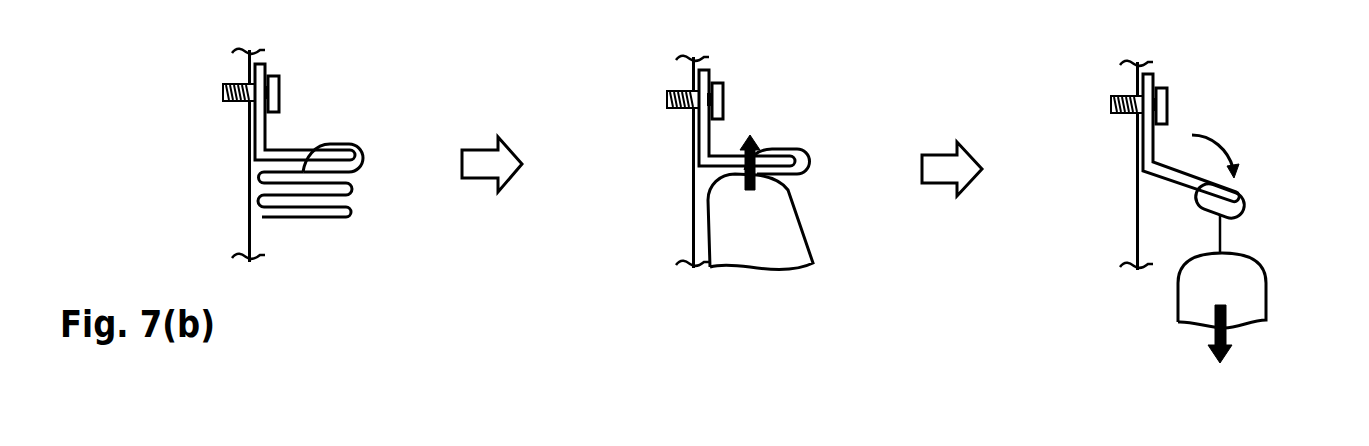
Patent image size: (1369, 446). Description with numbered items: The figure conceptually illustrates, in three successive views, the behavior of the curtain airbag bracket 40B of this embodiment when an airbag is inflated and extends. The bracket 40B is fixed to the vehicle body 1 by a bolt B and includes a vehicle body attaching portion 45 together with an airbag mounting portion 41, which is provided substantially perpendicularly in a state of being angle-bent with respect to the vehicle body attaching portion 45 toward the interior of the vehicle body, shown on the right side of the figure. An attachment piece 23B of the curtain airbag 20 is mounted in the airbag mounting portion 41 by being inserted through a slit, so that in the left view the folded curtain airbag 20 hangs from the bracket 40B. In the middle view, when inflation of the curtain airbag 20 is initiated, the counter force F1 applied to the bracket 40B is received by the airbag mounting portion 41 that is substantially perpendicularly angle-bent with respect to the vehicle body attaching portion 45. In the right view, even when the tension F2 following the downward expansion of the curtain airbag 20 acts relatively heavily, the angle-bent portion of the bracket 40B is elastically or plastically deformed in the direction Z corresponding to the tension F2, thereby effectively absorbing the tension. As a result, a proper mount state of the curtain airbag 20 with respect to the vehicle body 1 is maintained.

The vehicle body 1 is at (250, 252).
The bolt B is at (222, 92).
The vehicle body attaching portion 45 is at (280, 76).
The airbag mounting portion 41 is at (291, 148).
The curtain airbag bracket 40B is at (340, 53).
The attachment piece 23B is at (352, 147).
The curtain airbag 20 is at (352, 212).
The counter force F1 is at (792, 193).
The tension F2 is at (1228, 338).
The rotation direction Z is at (1225, 157).